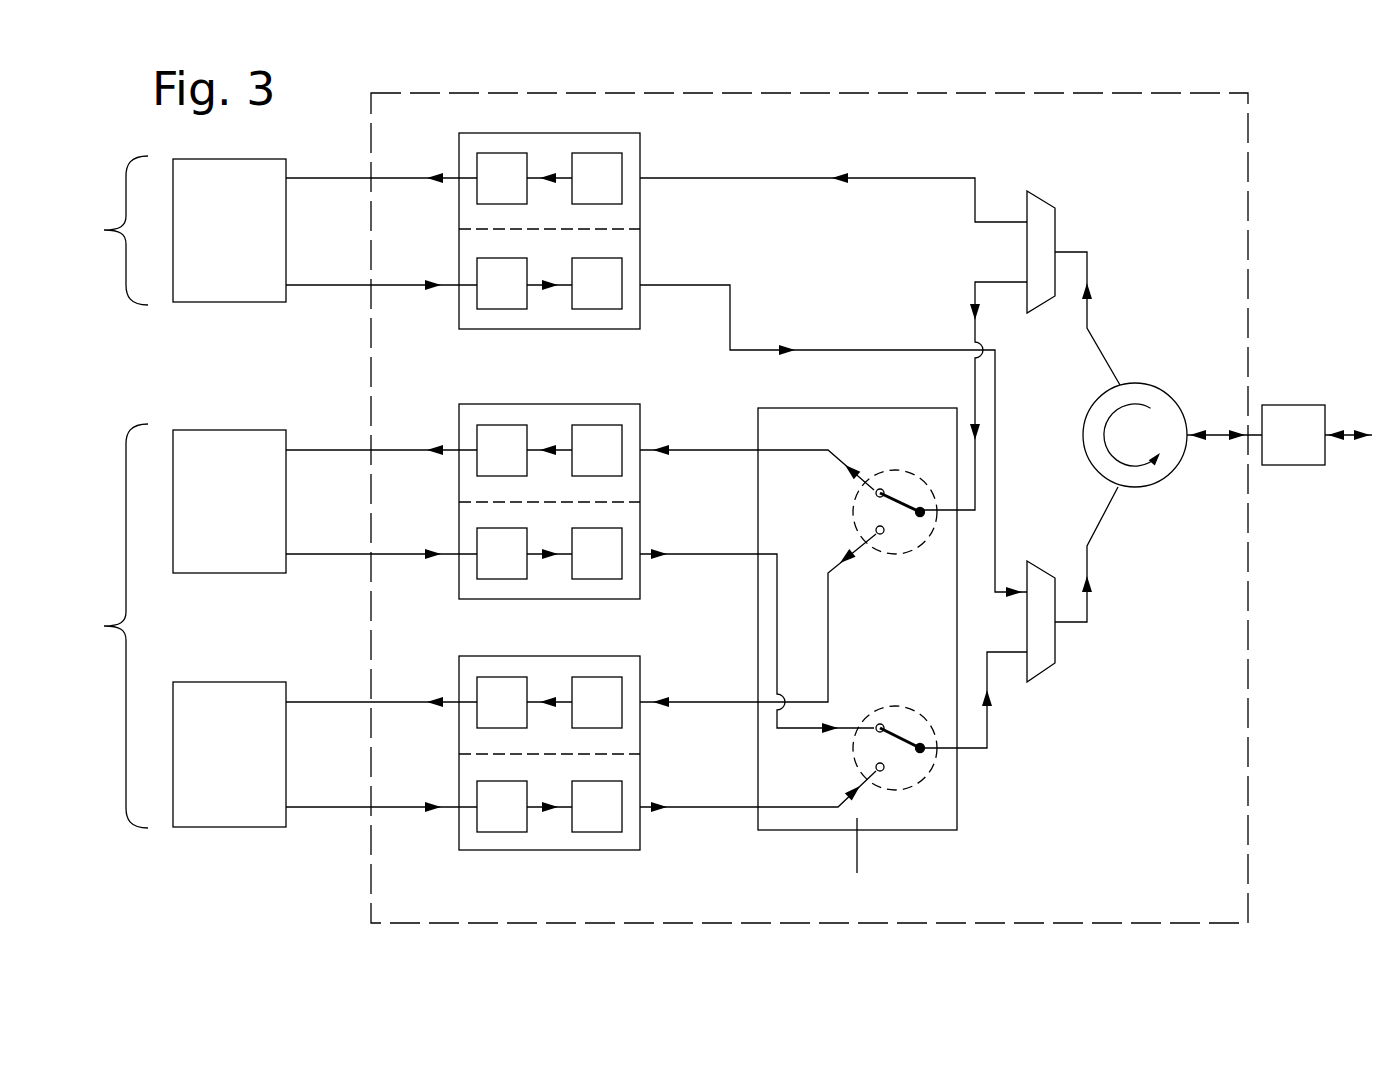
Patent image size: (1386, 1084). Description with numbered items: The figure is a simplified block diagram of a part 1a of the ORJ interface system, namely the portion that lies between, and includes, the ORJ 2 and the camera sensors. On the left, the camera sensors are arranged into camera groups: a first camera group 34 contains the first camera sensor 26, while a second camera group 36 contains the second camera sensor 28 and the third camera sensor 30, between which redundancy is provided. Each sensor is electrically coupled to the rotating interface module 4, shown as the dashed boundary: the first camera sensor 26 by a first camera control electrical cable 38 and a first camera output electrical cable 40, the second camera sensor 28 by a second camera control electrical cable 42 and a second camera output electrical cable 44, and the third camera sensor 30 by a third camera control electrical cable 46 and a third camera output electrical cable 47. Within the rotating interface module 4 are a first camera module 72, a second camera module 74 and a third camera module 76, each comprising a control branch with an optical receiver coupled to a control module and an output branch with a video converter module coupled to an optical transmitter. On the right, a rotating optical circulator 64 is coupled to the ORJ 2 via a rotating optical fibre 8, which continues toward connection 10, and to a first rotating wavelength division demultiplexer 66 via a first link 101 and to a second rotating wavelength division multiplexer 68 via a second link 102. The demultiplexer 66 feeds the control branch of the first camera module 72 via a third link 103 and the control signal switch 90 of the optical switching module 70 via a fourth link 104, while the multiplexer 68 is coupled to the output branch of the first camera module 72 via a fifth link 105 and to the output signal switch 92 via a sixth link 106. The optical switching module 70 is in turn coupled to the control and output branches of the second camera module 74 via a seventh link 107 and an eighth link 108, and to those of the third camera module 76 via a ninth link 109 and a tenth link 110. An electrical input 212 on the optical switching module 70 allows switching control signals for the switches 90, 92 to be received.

The part of the ORJ interface system 1a is at (1300, 140).
The ORJ 2 is at (1285, 449).
The rotating interface module 4 is at (1248, 218).
The rotating optical fibre 8 is at (1213, 442).
The antenna connection 10 is at (1378, 412).
The first camera sensor 26 is at (214, 246).
The second camera sensor 28 is at (214, 515).
The third camera sensor 30 is at (214, 768).
The first camera group 34 is at (109, 230).
The second camera group 36 is at (109, 626).
The first camera control electrical cable 38 is at (338, 176).
The first camera output electrical cable 40 is at (327, 287).
The second camera control electrical cable 42 is at (320, 448).
The second camera output electrical cable 44 is at (322, 556).
The third camera control electrical cable 46 is at (328, 702).
The third camera output electrical cable 47 is at (315, 809).
The rotating optical circulator 64 is at (1152, 406).
The first rotating wavelength division multiplexer-demultiplexer 66 is at (1040, 213).
The second rotating wavelength division multiplexer-demultiplexer 68 is at (1040, 645).
The optical switching module 70 is at (958, 798).
The first camera module 72 is at (520, 330).
The second camera module 74 is at (568, 404).
The third camera module 76 is at (459, 678).
The control signal switch 90 is at (887, 540).
The output signal switch 92 is at (912, 712).
The first link 101 is at (1093, 263).
The second link 102 is at (1090, 600).
The third link 103 is at (772, 178).
The fourth link 104 is at (973, 290).
The fifth link 105 is at (853, 350).
The sixth link 106 is at (990, 745).
The seventh link 107 is at (706, 449).
The eighth link 108 is at (700, 558).
The ninth link 109 is at (710, 702).
The tenth link 110 is at (700, 812).
The electrical input 212 is at (857, 858).